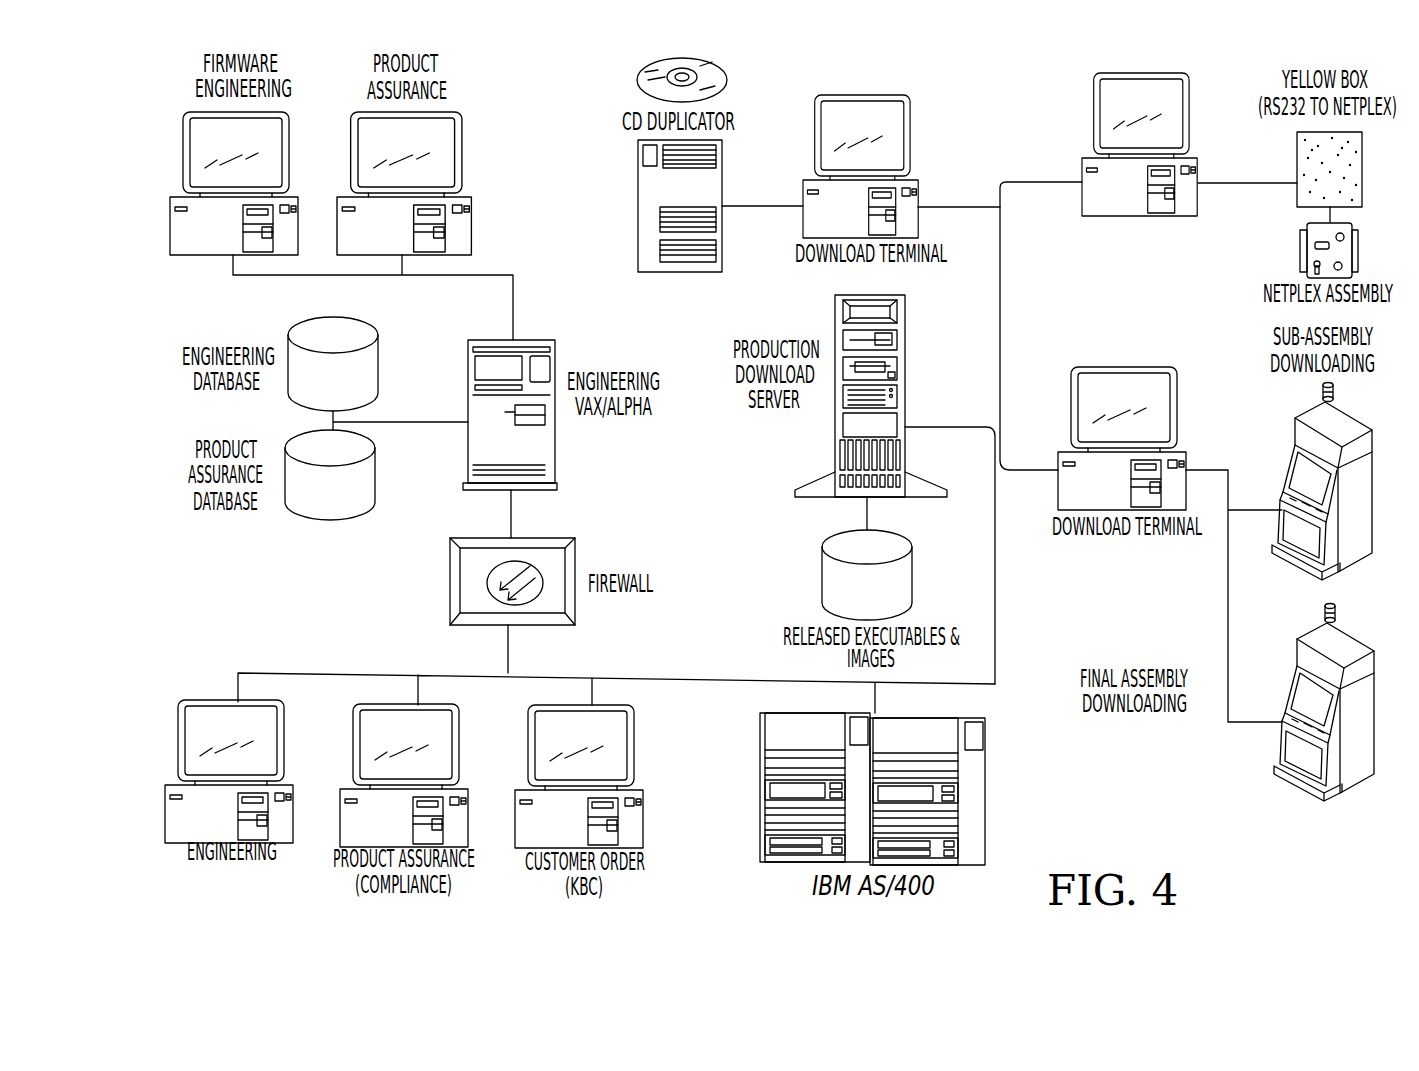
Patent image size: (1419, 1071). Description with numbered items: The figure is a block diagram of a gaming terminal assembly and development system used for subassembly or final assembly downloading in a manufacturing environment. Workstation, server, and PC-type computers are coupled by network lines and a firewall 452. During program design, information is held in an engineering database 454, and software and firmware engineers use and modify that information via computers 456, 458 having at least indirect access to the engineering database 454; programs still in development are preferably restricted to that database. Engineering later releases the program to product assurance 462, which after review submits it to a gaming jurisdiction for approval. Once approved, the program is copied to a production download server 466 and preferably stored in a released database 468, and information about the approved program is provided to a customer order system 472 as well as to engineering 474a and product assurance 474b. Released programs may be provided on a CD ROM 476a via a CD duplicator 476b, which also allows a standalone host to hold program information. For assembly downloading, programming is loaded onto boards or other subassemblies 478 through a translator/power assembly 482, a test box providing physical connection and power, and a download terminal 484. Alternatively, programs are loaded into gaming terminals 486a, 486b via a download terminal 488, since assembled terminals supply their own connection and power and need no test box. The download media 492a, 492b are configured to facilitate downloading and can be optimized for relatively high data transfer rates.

The firewall 452 is at (575, 560).
The engineering database 454 is at (378, 352).
The computer 456 is at (555, 358).
The computer 458 is at (290, 145).
The product assurance 462 is at (462, 152).
The production download server 466 is at (905, 345).
The released database 468 is at (822, 578).
The customer order system 472 is at (635, 750).
The engineering 474a is at (200, 702).
The product assurance 474b is at (456, 745).
The CD ROM 476a is at (727, 80).
The CD duplicator 476b is at (638, 195).
The boards or other subassemblies 478 is at (1358, 252).
The translator/power assembly 482 is at (1297, 195).
The download terminal 484 is at (1092, 130).
The gaming terminal 486a is at (1278, 522).
The gaming terminal 486b is at (1285, 735).
The download terminal 488 is at (1072, 392).
The download media 492a is at (1240, 183).
The download media 492b is at (1230, 470).